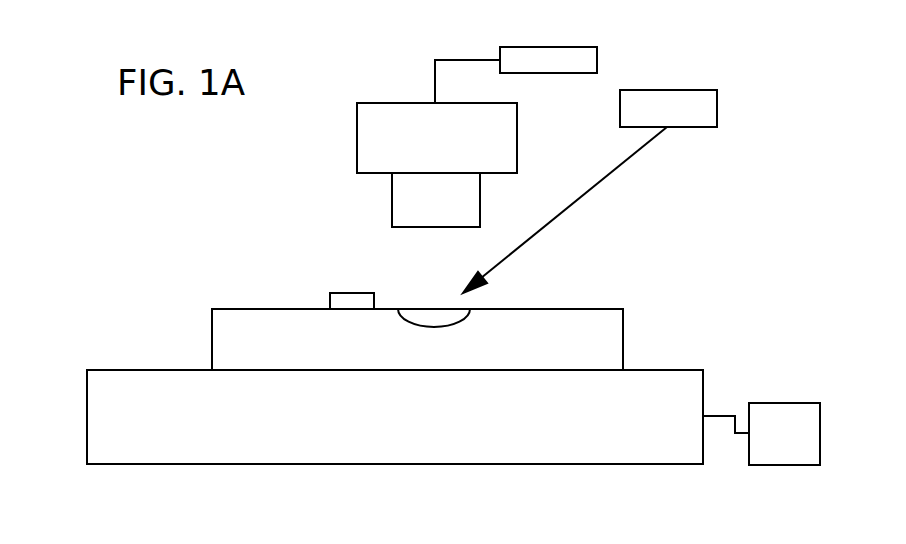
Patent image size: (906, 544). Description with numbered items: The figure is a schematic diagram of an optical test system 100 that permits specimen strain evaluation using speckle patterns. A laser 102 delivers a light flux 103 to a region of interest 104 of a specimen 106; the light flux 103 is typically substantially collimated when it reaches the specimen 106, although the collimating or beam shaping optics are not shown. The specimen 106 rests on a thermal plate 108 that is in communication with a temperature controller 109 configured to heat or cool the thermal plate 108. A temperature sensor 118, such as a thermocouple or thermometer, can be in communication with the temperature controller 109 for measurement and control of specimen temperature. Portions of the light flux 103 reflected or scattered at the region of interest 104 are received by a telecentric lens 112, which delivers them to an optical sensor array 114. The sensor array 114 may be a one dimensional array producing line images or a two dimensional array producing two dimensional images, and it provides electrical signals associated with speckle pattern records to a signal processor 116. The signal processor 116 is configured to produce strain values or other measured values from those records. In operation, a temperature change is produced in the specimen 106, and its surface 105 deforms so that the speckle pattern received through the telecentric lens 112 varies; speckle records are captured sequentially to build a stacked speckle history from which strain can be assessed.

The optical test system 100 is at (748, 297).
The laser 102 is at (643, 90).
The light flux 103 is at (537, 235).
The region of interest 104 is at (415, 309).
The surface 105 is at (520, 308).
The specimen 106 is at (623, 340).
The thermal plate 108 is at (87, 418).
The temperature controller 109 is at (785, 465).
The telecentric lens 112 is at (480, 202).
The optical sensor array 114 is at (395, 103).
The signal processor 116 is at (550, 47).
The temperature sensor 118 is at (357, 293).